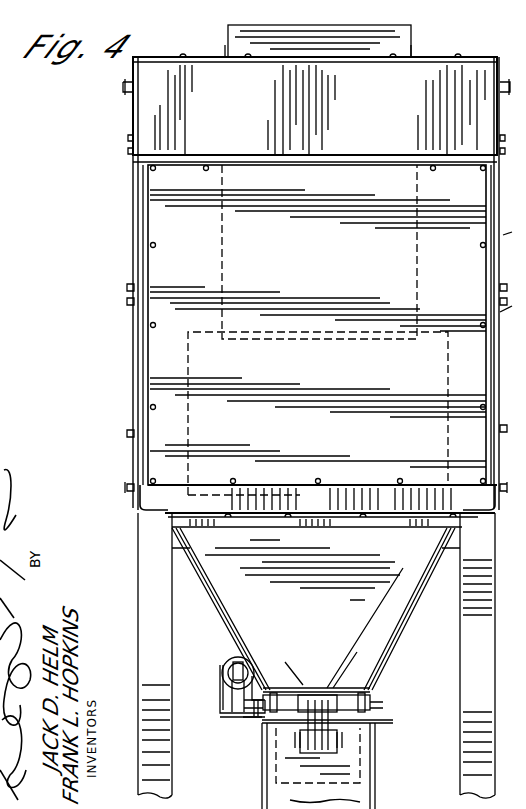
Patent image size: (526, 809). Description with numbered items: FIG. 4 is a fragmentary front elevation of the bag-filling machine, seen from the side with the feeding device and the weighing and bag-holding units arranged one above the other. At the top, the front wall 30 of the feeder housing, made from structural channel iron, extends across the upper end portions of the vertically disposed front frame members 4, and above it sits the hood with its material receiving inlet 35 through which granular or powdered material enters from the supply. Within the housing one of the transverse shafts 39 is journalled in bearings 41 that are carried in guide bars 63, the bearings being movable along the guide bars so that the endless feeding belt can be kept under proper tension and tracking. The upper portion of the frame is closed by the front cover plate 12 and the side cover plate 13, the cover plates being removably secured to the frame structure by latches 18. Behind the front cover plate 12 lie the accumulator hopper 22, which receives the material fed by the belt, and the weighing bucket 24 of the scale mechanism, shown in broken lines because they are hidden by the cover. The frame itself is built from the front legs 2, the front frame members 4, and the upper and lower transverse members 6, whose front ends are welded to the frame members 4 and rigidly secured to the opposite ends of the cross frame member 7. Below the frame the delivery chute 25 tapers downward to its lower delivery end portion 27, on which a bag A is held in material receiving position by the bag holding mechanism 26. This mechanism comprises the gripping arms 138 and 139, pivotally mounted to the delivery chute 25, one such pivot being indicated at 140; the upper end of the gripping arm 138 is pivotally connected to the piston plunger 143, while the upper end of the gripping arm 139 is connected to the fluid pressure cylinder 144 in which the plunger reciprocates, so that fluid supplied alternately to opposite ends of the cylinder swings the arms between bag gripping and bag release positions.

The front legs 2 is at (145, 614).
The front frame members 4 is at (133, 398).
The transverse members 6 is at (138, 505).
The cross frame member 7 is at (172, 518).
The front cover plate 12 is at (327, 268).
The side cover plate 13 is at (133, 200).
The latches 18 is at (127, 301).
The accumulator hopper 22 is at (223, 248).
The weighing bucket 24 is at (188, 364).
The delivery chute 25 is at (332, 619).
The bag holding mechanism 26 is at (290, 735).
The lower delivery end portion 27 is at (376, 770).
The front wall 30 is at (380, 117).
The material receiving inlet 35 is at (411, 38).
The transverse shaft 39 is at (513, 318).
The bearings 41 is at (517, 351).
The guide bars 63 is at (514, 310).
The gripping arm 138 is at (345, 727).
The gripping arm 139 is at (225, 700).
The pivot mounting 140 is at (385, 706).
The piston plunger 143 is at (225, 683).
The fluid pressure cylinder 144 is at (232, 659).
The bag A is at (376, 800).